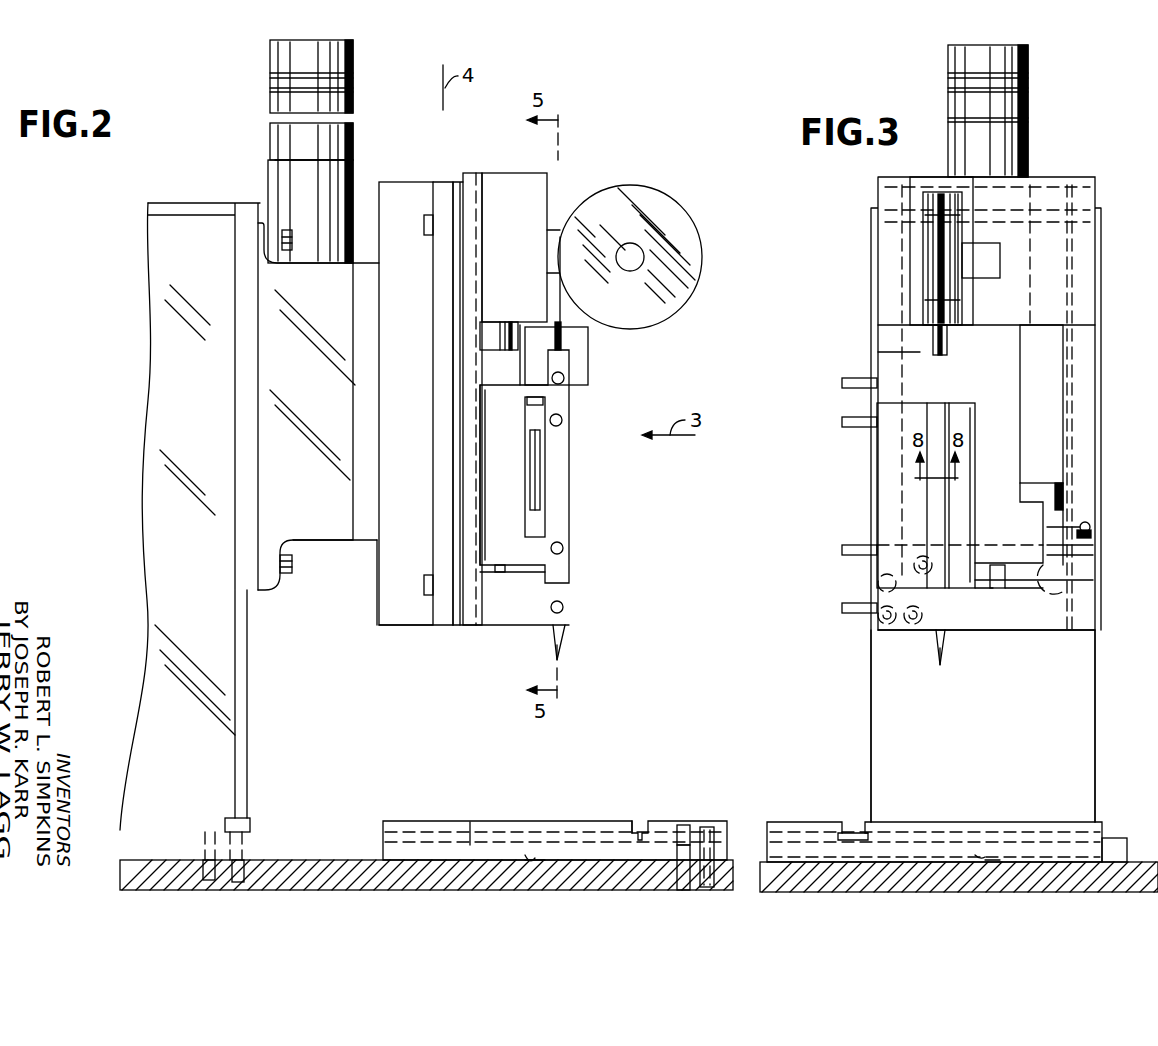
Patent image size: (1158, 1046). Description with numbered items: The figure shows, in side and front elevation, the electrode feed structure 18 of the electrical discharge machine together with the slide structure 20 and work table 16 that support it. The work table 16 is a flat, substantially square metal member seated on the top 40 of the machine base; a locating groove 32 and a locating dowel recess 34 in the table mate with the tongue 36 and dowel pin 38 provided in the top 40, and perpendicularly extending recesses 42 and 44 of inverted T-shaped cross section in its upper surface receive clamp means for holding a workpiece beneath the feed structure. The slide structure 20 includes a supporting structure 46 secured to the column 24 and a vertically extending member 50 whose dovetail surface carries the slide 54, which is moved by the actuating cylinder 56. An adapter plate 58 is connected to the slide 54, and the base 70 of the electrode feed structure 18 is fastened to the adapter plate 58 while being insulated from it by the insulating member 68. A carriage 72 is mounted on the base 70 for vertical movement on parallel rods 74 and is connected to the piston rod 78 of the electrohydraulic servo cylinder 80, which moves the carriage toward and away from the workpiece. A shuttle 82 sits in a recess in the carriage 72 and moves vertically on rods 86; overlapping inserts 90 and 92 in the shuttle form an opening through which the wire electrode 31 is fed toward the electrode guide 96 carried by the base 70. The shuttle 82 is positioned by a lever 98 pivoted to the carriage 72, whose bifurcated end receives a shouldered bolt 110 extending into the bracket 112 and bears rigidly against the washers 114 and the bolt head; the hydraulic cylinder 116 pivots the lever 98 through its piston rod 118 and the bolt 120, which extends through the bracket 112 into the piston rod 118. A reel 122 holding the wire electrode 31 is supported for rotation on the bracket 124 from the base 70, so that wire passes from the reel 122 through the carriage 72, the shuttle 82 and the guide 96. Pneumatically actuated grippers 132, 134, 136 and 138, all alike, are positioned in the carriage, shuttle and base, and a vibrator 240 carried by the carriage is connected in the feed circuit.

In FIG. 2, the work table 16 is at (668, 822).
In FIG. 3, the work table 16 is at (1085, 822).
In FIG. 2, the electrode feed structure 18 is at (500, 628).
In FIG. 3, the electrode feed structure 18 is at (1098, 420).
In FIG. 2, the vertical slide structure 20 is at (382, 182).
In FIG. 2, the column 24 is at (248, 668).
In FIG. 3, the column 24 is at (1097, 660).
In FIG. 2, the wire electrode 31 is at (553, 655).
In FIG. 3, the wire electrode 31 is at (936, 660).
In FIG. 2, the locating groove 32 is at (540, 865).
In FIG. 3, the locating groove 32 is at (1000, 860).
In FIG. 2, the locating dowel recess 34 is at (675, 875).
In FIG. 2, the tongue 36 is at (525, 860).
In FIG. 3, the tongue 36 is at (985, 858).
In FIG. 2, the dowel pin 38 is at (690, 893).
In FIG. 2, the top of the base 40 is at (290, 860).
In FIG. 2, the recess 42 is at (645, 822).
In FIG. 2, the recess 44 is at (475, 830).
In FIG. 3, the recess 44 is at (850, 822).
In FIG. 2, the supporting structure 46 is at (304, 548).
In FIG. 2, the vertically extending member 50 is at (360, 545).
In FIG. 2, the slide 54 is at (392, 628).
In FIG. 2, the actuating cylinder 56 is at (355, 50).
In FIG. 3, the actuating cylinder 56 is at (1030, 65).
In FIG. 2, the adapter plate 58 is at (445, 628).
In FIG. 2, the insulating member 68 is at (462, 180).
In FIG. 3, the base 70 is at (878, 248).
In FIG. 2, the carriage 72 is at (527, 497).
In FIG. 3, the carriage 72 is at (878, 360).
In FIG. 2, the parallel rods 74 is at (497, 574).
In FIG. 2, the piston rod 78 is at (520, 325).
In FIG. 2, the electrohydraulic servo cylinder 80 is at (532, 178).
In FIG. 3, the electrohydraulic servo cylinder 80 is at (910, 280).
In FIG. 2, the shuttle 82 is at (569, 522).
In FIG. 3, the shuttle 82 is at (877, 487).
In FIG. 2, the rods 86 is at (541, 478).
In FIG. 3, the insert 90 is at (935, 537).
In FIG. 3, the insert 92 is at (947, 420).
In FIG. 2, the electrode guide 96 is at (562, 645).
In FIG. 3, the electrode guide 96 is at (947, 650).
In FIG. 3, the lever 98 is at (1090, 522).
In FIG. 3, the shouldered bolt 110 is at (1093, 535).
In FIG. 3, the bracket 112 is at (1093, 570).
In FIG. 3, the washers 114 is at (1095, 548).
In FIG. 3, the hydraulic cylinder 116 is at (1095, 390).
In FIG. 3, the piston rod 118 is at (1063, 497).
In FIG. 3, the bolt 120 is at (1055, 580).
In FIG. 2, the reel 122 is at (655, 198).
In FIG. 3, the reel 122 is at (923, 308).
In FIG. 2, the bracket 124 is at (547, 233).
In FIG. 3, the bracket 124 is at (1002, 250).
In FIG. 2, the pneumatically actuated gripper 132 is at (565, 378).
In FIG. 3, the pneumatically actuated gripper 132 is at (842, 385).
In FIG. 2, the pneumatically actuated gripper 134 is at (562, 419).
In FIG. 3, the pneumatically actuated gripper 134 is at (842, 424).
In FIG. 2, the pneumatically actuated gripper 136 is at (564, 548).
In FIG. 3, the pneumatically actuated gripper 136 is at (842, 550).
In FIG. 2, the pneumatically actuated gripper 138 is at (564, 607).
In FIG. 3, the pneumatically actuated gripper 138 is at (842, 610).
In FIG. 2, the vibrator 240 is at (588, 345).
In FIG. 3, the vibrator 240 is at (975, 325).